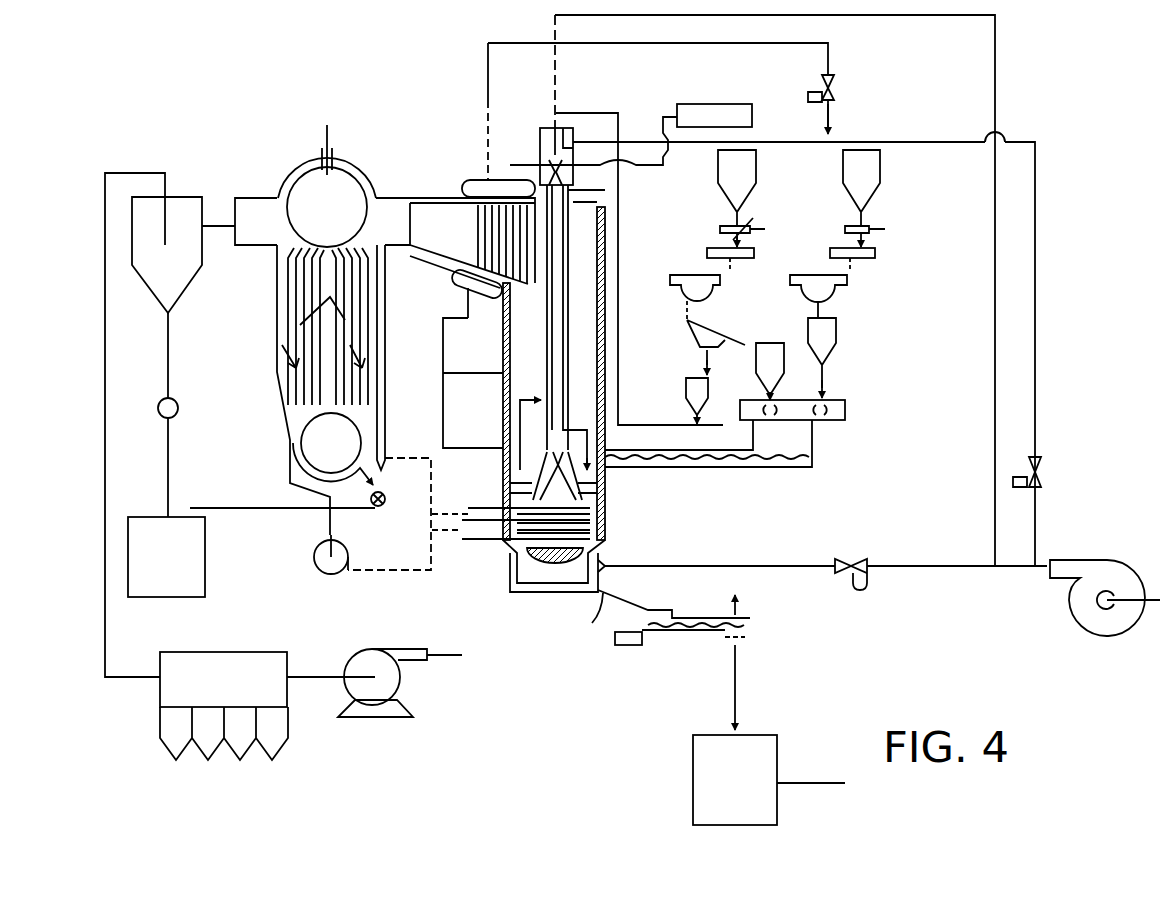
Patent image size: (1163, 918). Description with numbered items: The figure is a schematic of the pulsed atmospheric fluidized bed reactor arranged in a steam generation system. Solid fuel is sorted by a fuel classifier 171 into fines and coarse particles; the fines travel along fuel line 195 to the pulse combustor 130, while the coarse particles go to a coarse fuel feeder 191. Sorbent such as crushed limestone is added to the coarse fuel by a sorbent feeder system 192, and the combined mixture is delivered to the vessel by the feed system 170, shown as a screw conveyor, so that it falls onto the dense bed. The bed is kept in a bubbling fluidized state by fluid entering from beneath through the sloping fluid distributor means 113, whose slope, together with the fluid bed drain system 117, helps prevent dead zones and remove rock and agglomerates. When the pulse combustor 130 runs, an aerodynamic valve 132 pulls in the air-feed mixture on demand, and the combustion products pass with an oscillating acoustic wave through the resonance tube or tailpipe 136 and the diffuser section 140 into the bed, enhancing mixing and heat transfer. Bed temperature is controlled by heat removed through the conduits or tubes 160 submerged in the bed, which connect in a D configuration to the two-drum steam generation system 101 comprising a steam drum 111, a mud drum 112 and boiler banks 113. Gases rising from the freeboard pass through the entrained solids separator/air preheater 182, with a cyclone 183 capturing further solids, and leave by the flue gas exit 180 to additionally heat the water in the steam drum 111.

The two-drum steam generation system 101 is at (264, 172).
The steam drum 111 is at (318, 197).
The mud drum 112 is at (320, 450).
The fluid distributor means 113 is at (318, 388).
The fluid bed drain system 117 is at (603, 594).
The pulse combustor 130 is at (547, 182).
The aerodynamic valve 132 is at (553, 162).
The resonance tube or tailpipe 136 is at (550, 352).
The diffuser section 140 is at (540, 472).
The conduits or tubes 160 is at (605, 520).
The feed system 170 is at (772, 470).
The fuel classifier 171 is at (685, 326).
The flue gas exit 180 is at (432, 215).
The entrained solids separator/air preheater 182 is at (472, 218).
The cyclone 183 is at (185, 288).
The coarse fuel feeder 191 is at (768, 343).
The sorbent feeder system 192 is at (856, 296).
The fuel line 195 is at (620, 200).